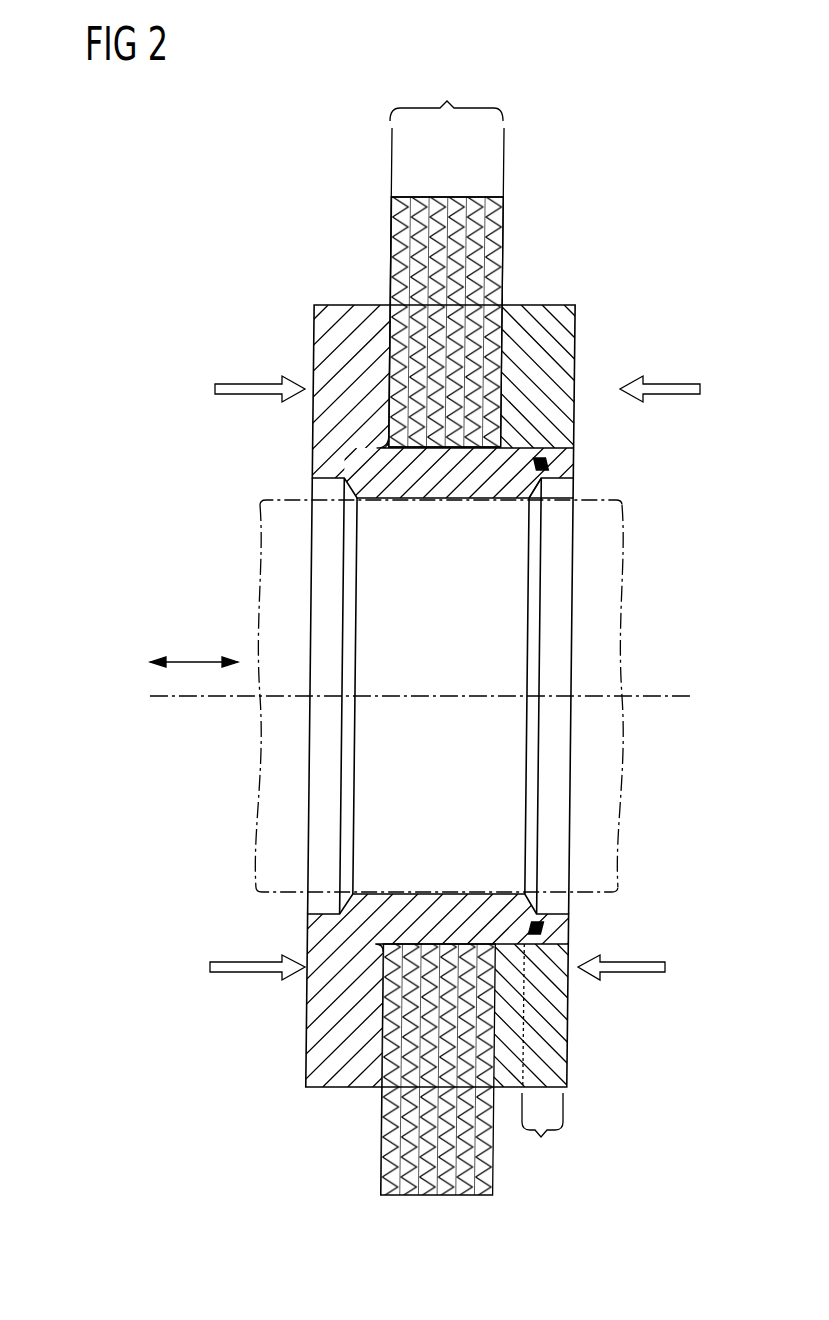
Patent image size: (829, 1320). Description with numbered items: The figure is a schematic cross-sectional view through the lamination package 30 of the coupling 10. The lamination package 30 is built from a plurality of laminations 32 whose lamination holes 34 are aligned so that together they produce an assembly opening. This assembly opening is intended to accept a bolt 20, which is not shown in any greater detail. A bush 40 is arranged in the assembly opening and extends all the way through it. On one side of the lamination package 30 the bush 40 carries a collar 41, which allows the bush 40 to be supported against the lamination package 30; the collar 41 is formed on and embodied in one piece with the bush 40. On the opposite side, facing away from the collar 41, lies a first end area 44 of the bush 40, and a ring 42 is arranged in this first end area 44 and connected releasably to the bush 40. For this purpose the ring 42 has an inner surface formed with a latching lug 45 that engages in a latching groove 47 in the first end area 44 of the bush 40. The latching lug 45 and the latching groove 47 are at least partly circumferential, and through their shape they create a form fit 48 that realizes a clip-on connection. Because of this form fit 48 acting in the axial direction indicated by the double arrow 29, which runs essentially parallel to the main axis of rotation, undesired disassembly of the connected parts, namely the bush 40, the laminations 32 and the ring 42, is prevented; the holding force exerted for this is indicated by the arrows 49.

The coupling 10 is at (166, 484).
The bolt 20 is at (272, 797).
The double arrow 29 is at (193, 660).
The lamination package 30 is at (442, 627).
The laminations 32 is at (426, 196).
The lamination holes 34 is at (376, 443).
The bush 40 is at (357, 1088).
The collar 41 is at (335, 306).
The ring 42 is at (535, 306).
The first end area 44 is at (542, 1059).
The latching lug 45 is at (541, 442).
The latching groove 47 is at (536, 468).
The form fit 48 is at (548, 910).
The arrows 49 is at (250, 382).